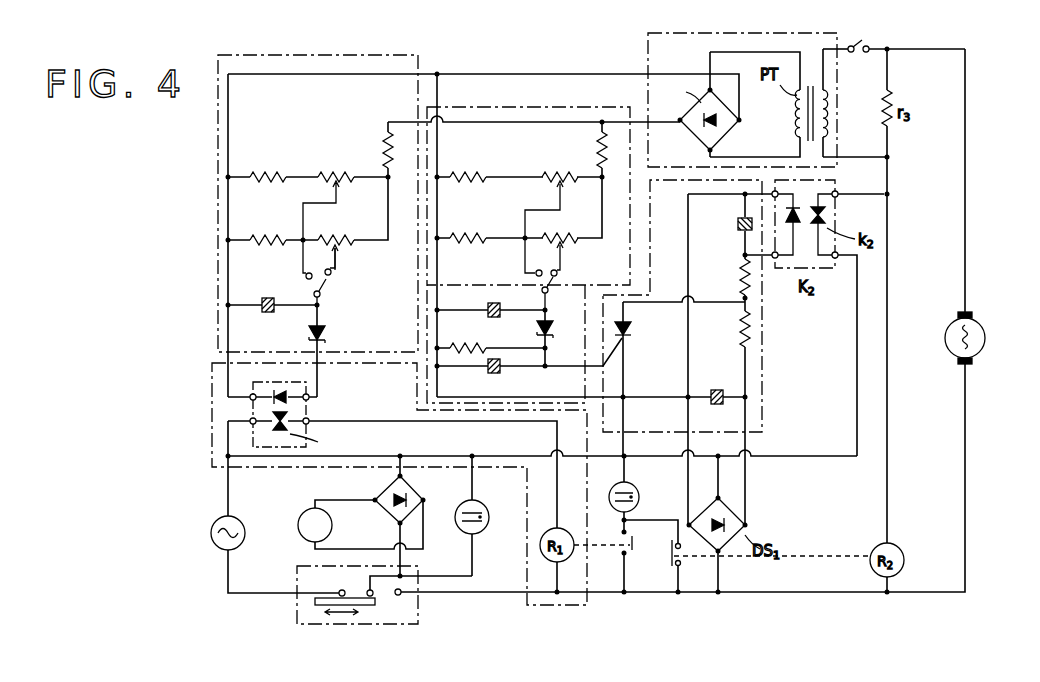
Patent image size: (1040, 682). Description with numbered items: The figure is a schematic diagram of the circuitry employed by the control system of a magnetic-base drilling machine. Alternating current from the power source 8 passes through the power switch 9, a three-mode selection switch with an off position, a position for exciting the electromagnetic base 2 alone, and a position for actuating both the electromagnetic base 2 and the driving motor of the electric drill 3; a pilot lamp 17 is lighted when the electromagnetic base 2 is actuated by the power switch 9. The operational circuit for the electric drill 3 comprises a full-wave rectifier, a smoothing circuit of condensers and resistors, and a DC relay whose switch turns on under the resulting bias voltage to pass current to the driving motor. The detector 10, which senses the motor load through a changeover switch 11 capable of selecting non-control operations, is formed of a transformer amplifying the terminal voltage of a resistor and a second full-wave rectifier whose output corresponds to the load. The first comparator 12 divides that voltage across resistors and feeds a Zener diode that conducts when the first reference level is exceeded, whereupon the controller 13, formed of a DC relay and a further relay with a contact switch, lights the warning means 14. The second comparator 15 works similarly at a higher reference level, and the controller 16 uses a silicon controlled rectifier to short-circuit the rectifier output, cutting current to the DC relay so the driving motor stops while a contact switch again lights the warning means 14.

The electromagnetic base 2 is at (310, 508).
The electric drill 3 is at (984, 338).
The power source 8 is at (240, 521).
The power switch 9 is at (355, 625).
The detector 10 is at (742, 90).
The changeover switch 11 is at (862, 41).
The comparator 12 is at (318, 216).
The controller 13 is at (377, 484).
The warning means 14 is at (638, 490).
The comparator 15 is at (528, 246).
The controller 16 is at (701, 318).
The pilot lamp 17 is at (487, 523).